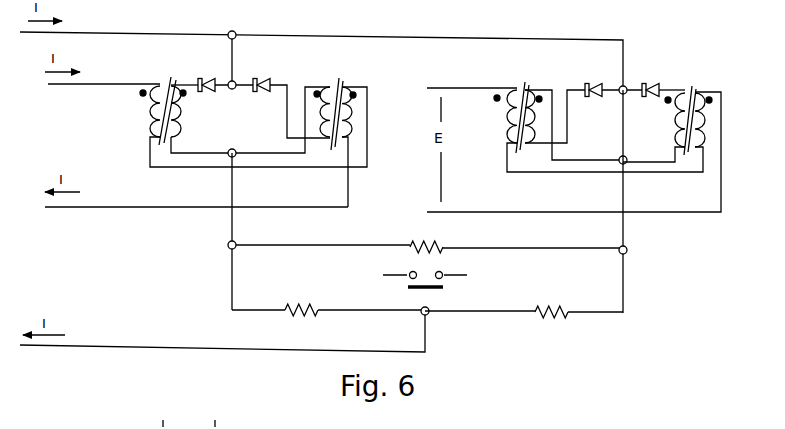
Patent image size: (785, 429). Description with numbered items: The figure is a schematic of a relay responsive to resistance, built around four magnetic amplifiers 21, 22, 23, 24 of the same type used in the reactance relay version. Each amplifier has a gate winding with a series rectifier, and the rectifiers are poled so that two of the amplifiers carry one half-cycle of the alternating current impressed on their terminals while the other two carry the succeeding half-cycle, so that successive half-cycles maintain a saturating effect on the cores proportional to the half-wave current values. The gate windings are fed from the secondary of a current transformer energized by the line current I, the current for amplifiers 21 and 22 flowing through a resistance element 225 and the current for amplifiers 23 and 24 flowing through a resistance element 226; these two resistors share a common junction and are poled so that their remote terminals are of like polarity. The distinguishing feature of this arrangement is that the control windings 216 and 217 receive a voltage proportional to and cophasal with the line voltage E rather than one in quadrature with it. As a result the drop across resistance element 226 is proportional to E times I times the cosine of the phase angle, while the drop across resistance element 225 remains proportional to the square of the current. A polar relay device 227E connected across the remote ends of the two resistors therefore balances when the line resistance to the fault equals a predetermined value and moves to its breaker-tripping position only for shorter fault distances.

The magnetic amplifier 21 is at (160, 78).
The magnetic amplifier 22 is at (331, 80).
The magnetic amplifier 23 is at (498, 102).
The magnetic amplifier 24 is at (711, 105).
The control winding 216 is at (502, 118).
The control winding 217 is at (707, 122).
The resistance element 225 is at (307, 318).
The resistance element 226 is at (548, 323).
The polar relay device 227E is at (432, 258).